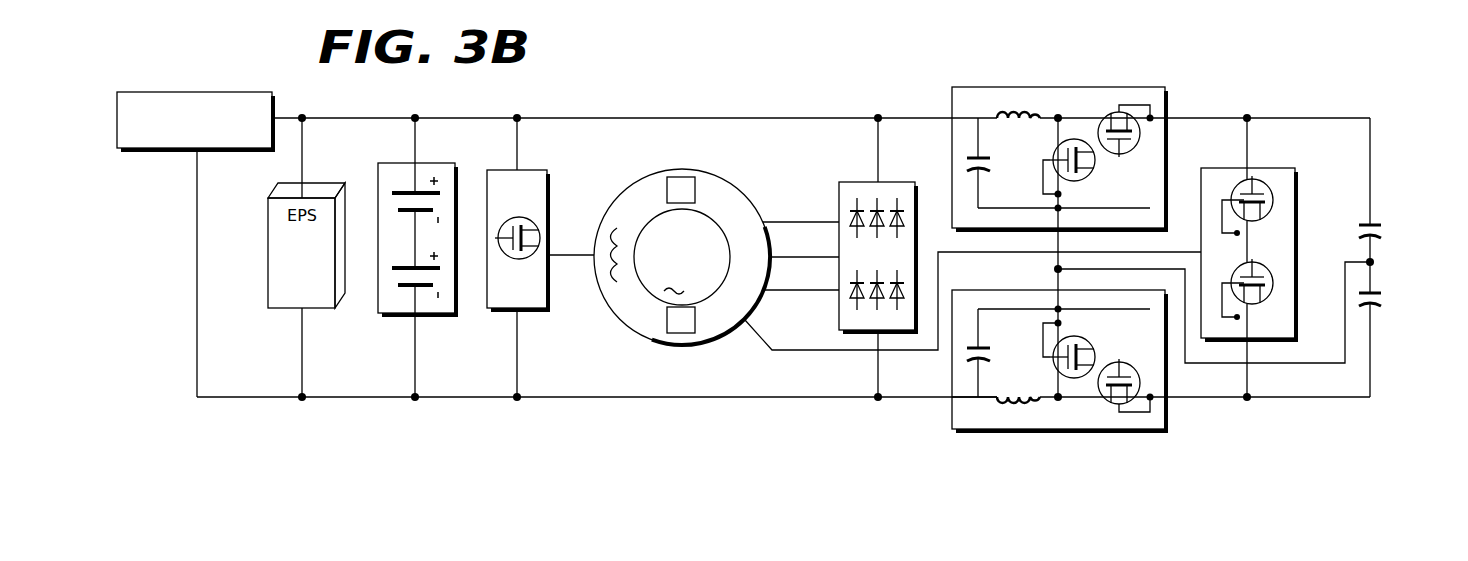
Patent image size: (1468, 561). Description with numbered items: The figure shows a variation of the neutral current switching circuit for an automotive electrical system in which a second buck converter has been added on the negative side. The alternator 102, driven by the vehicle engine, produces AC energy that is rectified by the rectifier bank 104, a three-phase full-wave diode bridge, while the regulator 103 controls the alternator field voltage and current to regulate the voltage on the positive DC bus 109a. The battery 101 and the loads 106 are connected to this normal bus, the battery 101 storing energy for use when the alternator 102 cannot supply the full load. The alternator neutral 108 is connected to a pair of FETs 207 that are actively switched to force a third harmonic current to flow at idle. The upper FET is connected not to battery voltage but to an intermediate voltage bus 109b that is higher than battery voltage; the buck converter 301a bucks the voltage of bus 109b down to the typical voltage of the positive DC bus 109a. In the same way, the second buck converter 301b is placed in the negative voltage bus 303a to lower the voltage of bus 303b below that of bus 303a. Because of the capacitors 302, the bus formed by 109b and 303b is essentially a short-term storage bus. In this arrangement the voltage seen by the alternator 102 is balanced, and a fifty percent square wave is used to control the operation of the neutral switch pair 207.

The loads 106 is at (178, 92).
The battery 101 is at (403, 318).
The regulator 103 is at (524, 309).
The alternator 102 is at (684, 168).
The rectifier bank 104 is at (852, 182).
The alternator neutral 108 is at (800, 351).
The positive DC bus 109a is at (765, 118).
The intermediate voltage bus 109b is at (1205, 117).
The buck converter 301a is at (995, 87).
The second buck converter 301b is at (1112, 431).
The pair of FETs 207 is at (1297, 168).
The capacitors 302 is at (1393, 255).
The negative voltage bus 303a is at (625, 398).
The lower negative bus 303b is at (1298, 398).